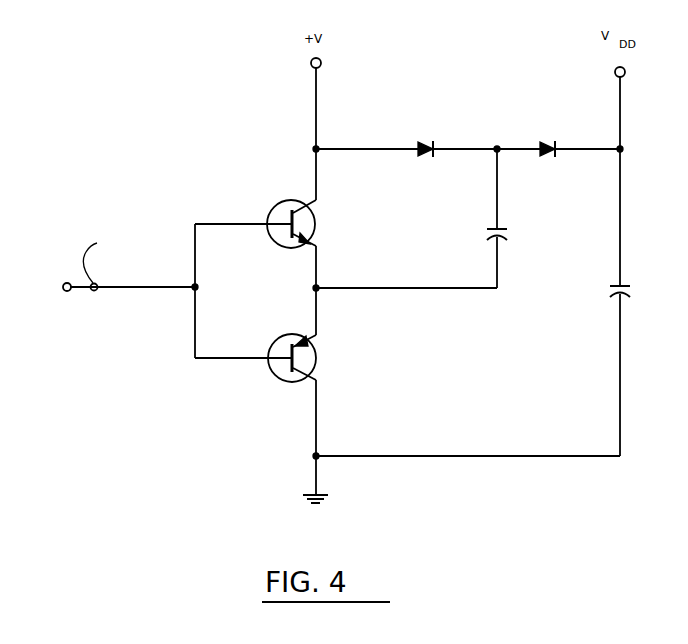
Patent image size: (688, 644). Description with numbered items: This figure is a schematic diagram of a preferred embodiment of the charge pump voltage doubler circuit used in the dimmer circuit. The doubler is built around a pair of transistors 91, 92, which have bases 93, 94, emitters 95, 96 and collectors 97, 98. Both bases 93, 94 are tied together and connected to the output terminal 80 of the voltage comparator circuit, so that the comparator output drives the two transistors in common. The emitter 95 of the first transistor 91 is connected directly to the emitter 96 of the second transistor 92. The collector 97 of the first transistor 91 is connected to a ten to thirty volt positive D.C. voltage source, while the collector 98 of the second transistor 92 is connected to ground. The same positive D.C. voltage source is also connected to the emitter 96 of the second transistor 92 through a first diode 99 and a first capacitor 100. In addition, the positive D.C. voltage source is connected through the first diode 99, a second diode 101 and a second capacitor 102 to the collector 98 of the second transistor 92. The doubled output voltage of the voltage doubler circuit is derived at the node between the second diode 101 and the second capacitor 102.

The output terminal 80 is at (111, 264).
The first transistor 91 is at (296, 200).
The second transistor 92 is at (295, 383).
The base 93 is at (268, 222).
The base 94 is at (268, 358).
The emitter 95 is at (318, 244).
The emitter 96 is at (318, 339).
The collector 97 is at (318, 205).
The collector 98 is at (318, 380).
The first diode 99 is at (424, 140).
The first capacitor 100 is at (493, 240).
The second diode 101 is at (546, 140).
The second capacitor 102 is at (617, 297).